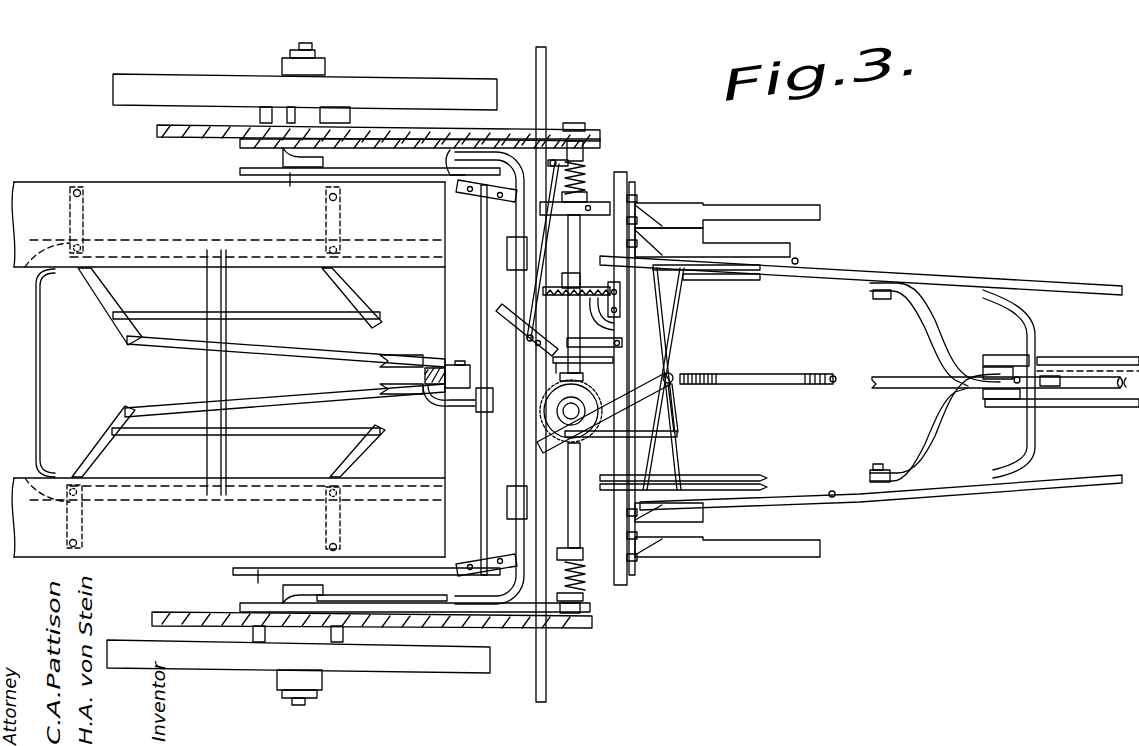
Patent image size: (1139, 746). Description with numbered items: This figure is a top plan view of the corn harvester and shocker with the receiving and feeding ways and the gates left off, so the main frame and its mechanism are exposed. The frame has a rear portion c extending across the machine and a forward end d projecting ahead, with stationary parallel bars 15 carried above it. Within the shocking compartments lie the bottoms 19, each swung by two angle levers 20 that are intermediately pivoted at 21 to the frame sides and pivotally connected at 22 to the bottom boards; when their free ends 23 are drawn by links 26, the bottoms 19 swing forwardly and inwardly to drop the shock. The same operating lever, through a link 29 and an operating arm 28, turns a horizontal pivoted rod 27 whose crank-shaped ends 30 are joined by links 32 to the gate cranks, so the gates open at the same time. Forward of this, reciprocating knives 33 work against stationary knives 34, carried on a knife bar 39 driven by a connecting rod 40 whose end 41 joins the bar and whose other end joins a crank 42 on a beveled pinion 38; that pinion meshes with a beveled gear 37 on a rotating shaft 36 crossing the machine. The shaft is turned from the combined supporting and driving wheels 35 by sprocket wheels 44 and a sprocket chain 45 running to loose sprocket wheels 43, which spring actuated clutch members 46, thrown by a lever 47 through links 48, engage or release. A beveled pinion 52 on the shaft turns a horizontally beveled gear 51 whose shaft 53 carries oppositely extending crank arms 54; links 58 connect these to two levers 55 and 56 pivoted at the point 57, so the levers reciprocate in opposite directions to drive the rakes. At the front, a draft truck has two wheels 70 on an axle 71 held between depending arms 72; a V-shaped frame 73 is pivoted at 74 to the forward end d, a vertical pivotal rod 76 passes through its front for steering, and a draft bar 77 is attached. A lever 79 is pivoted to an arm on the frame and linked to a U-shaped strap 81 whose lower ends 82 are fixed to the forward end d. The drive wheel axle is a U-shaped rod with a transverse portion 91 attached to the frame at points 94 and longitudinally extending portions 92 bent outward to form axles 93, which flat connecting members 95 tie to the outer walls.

The parallel bars 15 is at (1008, 366).
The bottoms of the shocking compartments 19 is at (229, 367).
The angle levers 20 is at (70, 218).
The intermediate pivot of angle levers 21 is at (95, 242).
The pivotal connection to bottom boards 22 is at (84, 193).
The free ends of angle levers 23 is at (100, 292).
The links 26 is at (290, 355).
The horizontal pivoted rod 27 is at (541, 630).
The operating arm 28 is at (480, 400).
The link 29 is at (425, 395).
The crank-shaped ends 30 is at (492, 160).
The links 32 is at (259, 378).
The reciprocating knives 33 is at (645, 215).
The stationary knives 34 is at (690, 248).
The combined supporting and driving wheels 35 is at (302, 373).
The rotating shaft 36 is at (555, 390).
The beveled gear 37 is at (500, 262).
The beveled pinion 38 is at (590, 302).
The knife bar 39 is at (637, 186).
The connecting rod 40 is at (665, 340).
The end of connecting rod 41 is at (660, 470).
The crank 42 is at (695, 272).
The loose sprocket wheels 43 is at (580, 125).
The sprocket wheels 44 is at (370, 139).
The sprocket chain 45 is at (487, 153).
The spring actuated clutch members 46 is at (586, 158).
The lever 47 is at (482, 325).
The links 48 is at (500, 200).
The horizontally beveled gear 51 is at (675, 375).
The beveled pinion 52 is at (430, 360).
The shaft of the gear 53 is at (560, 425).
The crank arms 54 is at (581, 430).
The lever 55 is at (720, 476).
The lever 56 is at (700, 282).
The pivot point of levers 57 is at (678, 390).
The links 58 is at (680, 434).
The wheels 70 is at (1070, 366).
The axle 71 is at (1036, 332).
The depending arms 72 is at (895, 272).
The V-shaped frame 73 is at (928, 436).
The pivot point 74 is at (890, 500).
The vertical pivotal rod 76 is at (1018, 400).
The draft bar 77 is at (1104, 390).
The lever 79 is at (888, 385).
The U-shaped strap 81 is at (1030, 445).
The lower ends of the strap 82 is at (992, 470).
The transverse portion 91 is at (500, 432).
The longitudinally extending portions 92 is at (376, 391).
The axles 93 is at (312, 46).
The attachment points 94 is at (480, 222).
The flat connecting members 95 is at (290, 600).
The rear portion of the frame c is at (30, 440).
The forward end of the frame d is at (800, 243).